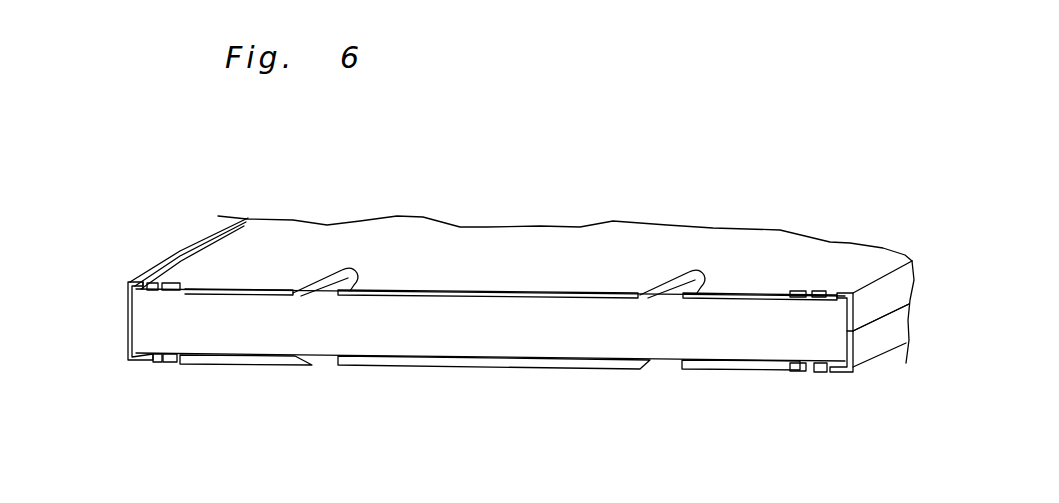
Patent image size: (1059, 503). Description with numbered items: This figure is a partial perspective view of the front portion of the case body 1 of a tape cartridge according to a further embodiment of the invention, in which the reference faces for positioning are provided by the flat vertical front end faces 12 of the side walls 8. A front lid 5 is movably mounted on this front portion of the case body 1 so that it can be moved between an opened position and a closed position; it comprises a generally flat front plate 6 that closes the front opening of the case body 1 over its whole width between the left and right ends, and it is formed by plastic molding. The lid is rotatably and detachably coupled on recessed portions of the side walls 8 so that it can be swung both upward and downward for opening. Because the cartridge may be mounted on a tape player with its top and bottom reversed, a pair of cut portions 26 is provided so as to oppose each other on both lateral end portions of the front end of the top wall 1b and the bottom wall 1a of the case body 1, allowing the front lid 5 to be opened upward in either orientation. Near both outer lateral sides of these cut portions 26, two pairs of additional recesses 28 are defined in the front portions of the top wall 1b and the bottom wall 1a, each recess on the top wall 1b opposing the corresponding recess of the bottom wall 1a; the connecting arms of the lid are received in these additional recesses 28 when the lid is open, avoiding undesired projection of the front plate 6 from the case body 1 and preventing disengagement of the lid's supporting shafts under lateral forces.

The case body 1 is at (583, 222).
The bottom wall 1a is at (898, 325).
The top wall 1b is at (683, 233).
The front lid 5 is at (492, 337).
The front plate 6 is at (548, 316).
The side walls 8 is at (191, 244).
The flat vertical front end faces 12 is at (125, 348).
The cut portions 26 is at (188, 279).
The additional recesses 28 is at (155, 280).